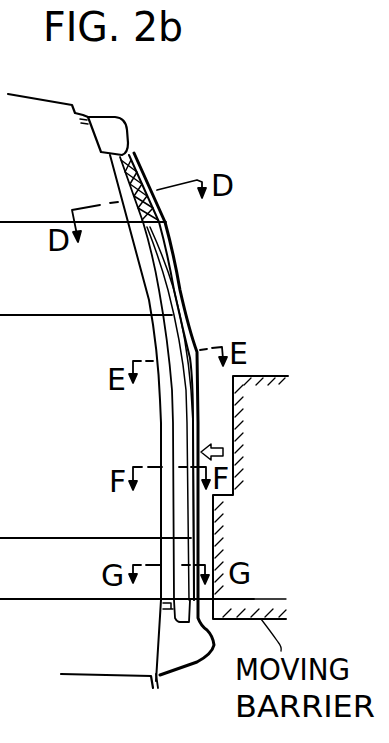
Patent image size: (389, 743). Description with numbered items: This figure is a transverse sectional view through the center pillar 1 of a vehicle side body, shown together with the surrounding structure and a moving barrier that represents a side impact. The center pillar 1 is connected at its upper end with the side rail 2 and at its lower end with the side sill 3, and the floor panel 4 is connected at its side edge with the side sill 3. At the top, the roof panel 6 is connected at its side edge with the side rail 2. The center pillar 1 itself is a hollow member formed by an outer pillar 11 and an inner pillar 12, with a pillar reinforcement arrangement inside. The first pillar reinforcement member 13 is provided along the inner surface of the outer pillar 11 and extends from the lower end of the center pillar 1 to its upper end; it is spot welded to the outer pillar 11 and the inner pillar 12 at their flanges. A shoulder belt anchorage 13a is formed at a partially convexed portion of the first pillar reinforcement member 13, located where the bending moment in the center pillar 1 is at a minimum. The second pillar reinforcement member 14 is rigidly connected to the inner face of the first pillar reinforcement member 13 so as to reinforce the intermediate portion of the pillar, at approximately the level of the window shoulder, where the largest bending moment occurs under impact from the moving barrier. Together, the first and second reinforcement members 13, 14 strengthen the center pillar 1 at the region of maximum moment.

The center pillar 1 is at (144, 175).
The side rail 2 is at (128, 119).
The side sill 3 is at (189, 668).
The floor panel 4 is at (109, 677).
The roof panel 6 is at (65, 103).
The outer pillar 11 is at (171, 244).
The inner pillar 12 is at (160, 425).
The first pillar reinforcement member 13 is at (179, 282).
The shoulder belt anchorage 13a is at (122, 198).
The second pillar reinforcement member 14 is at (181, 337).